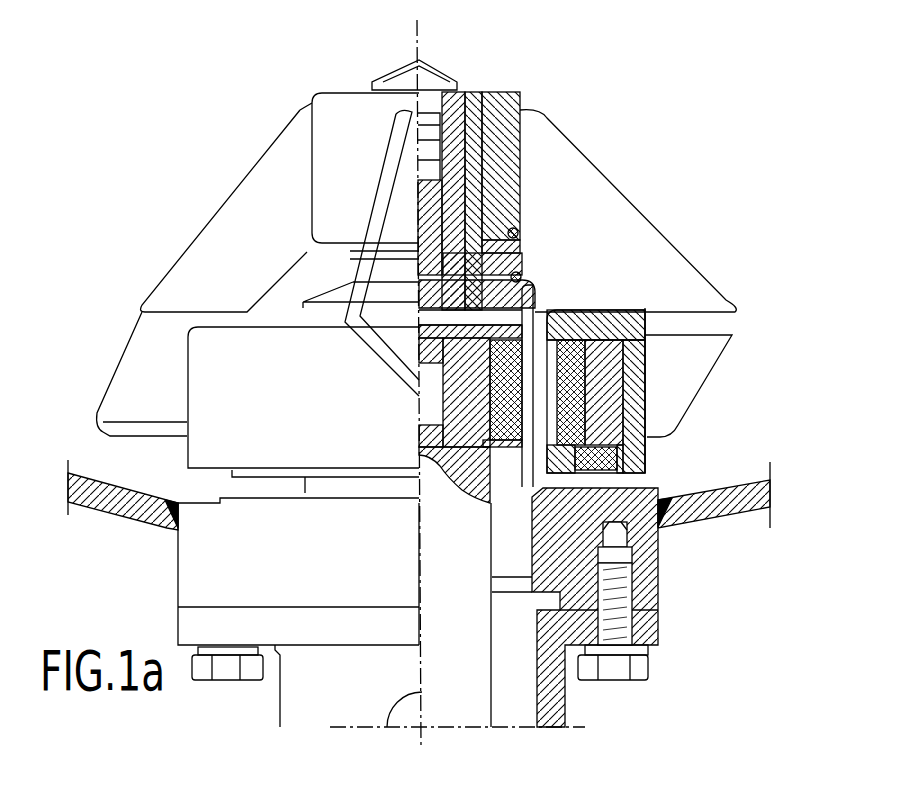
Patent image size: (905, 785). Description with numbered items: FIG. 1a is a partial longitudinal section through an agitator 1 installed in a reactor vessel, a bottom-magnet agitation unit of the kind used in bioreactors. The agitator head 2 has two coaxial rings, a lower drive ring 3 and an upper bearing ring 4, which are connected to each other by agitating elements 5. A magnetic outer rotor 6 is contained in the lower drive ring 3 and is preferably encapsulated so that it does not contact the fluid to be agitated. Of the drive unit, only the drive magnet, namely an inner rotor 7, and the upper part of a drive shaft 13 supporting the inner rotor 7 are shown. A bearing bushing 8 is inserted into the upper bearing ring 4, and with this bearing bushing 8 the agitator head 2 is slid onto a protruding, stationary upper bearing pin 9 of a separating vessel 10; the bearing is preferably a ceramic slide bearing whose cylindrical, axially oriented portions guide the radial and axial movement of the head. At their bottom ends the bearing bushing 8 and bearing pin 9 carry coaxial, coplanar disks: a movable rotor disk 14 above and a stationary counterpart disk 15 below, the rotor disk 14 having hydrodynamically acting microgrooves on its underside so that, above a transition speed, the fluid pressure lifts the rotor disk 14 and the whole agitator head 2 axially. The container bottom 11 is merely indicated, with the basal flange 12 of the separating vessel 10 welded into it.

The agitator 1 is at (157, 126).
The agitator head 2 is at (127, 246).
The lower drive ring 3 is at (250, 412).
The upper bearing ring 4 is at (354, 174).
The agitating elements 5 is at (254, 259).
The magnetic outer rotor 6 is at (640, 415).
The inner rotor 7 is at (500, 388).
The bearing bushing 8 is at (470, 93).
The upper bearing pin 9 is at (451, 112).
The separating vessel 10 is at (540, 300).
The container bottom 11 is at (117, 493).
The basal flange 12 is at (657, 570).
The drive shaft 13 is at (460, 687).
The rotor disk 14 is at (525, 233).
The counterpart disk 15 is at (523, 277).